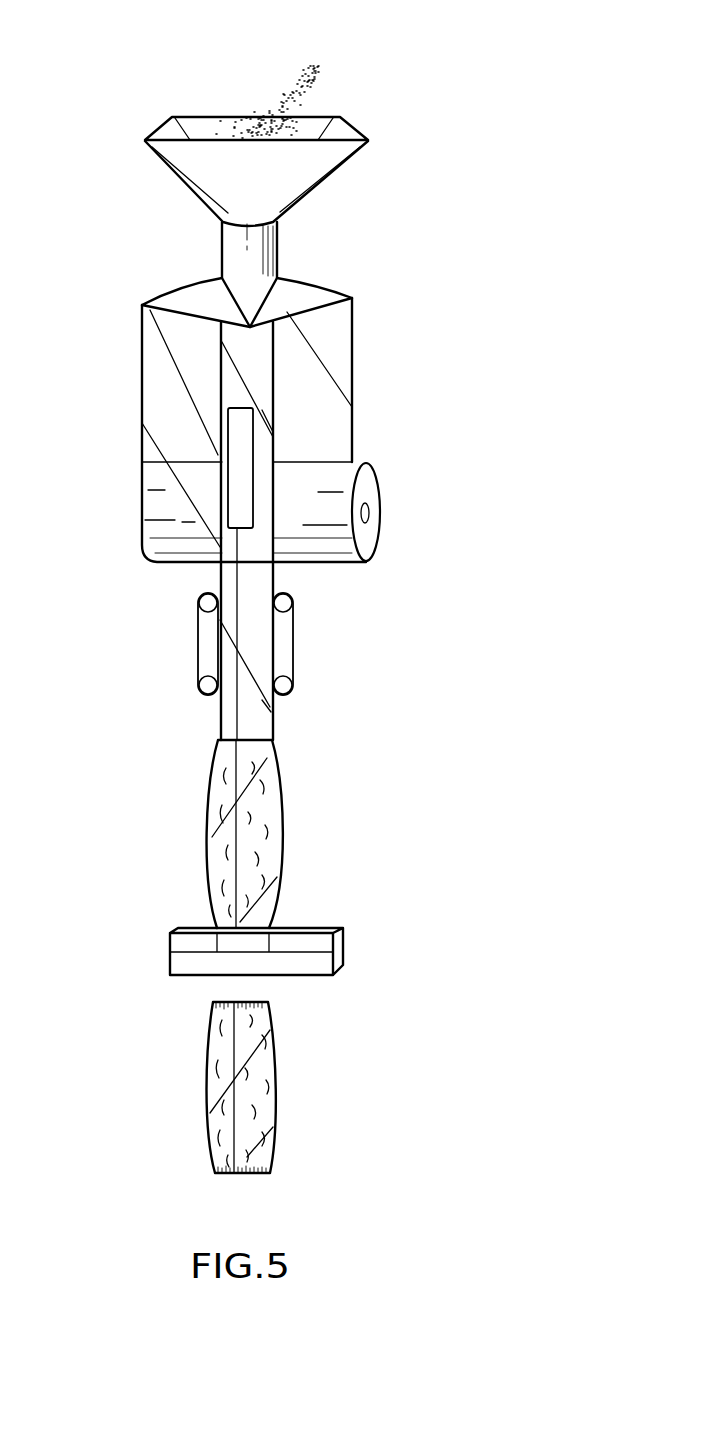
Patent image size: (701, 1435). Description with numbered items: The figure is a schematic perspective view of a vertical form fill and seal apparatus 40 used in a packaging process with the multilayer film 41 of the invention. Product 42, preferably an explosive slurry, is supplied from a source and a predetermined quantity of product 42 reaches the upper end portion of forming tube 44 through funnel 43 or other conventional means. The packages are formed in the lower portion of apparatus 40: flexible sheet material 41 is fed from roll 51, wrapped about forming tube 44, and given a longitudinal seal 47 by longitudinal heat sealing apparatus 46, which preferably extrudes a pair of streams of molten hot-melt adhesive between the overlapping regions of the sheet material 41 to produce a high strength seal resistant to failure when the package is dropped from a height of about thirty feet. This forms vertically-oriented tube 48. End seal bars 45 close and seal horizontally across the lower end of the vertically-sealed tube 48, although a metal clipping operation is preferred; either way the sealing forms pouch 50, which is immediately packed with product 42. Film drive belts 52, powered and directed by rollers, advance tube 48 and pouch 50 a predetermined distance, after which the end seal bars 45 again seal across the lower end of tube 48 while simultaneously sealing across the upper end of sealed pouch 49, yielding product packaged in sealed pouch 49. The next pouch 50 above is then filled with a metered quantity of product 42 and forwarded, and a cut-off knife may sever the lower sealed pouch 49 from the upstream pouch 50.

The vertical form fill and seal apparatus 40 is at (86, 362).
The multilayer film 41 is at (340, 353).
The product 42 is at (310, 88).
The funnel 43 is at (319, 190).
The forming tube 44 is at (278, 261).
The end seal bars 45 is at (303, 938).
The longitudinal heat sealing apparatus 46 is at (243, 437).
The longitudinal seal 47 is at (278, 576).
The vertically-oriented tube 48 is at (242, 574).
The sealed pouch 49 is at (273, 1083).
The pouch 50 is at (263, 862).
The roll 51 is at (368, 490).
The film drive belts 52 is at (197, 640).